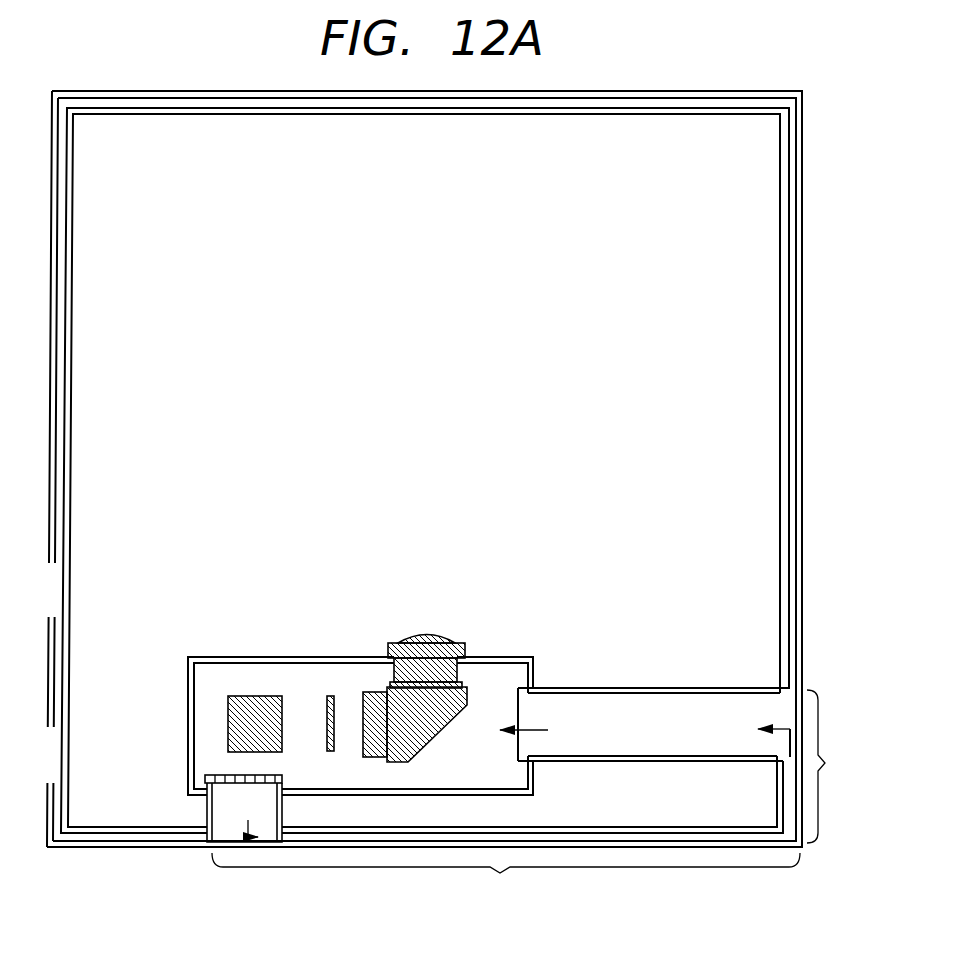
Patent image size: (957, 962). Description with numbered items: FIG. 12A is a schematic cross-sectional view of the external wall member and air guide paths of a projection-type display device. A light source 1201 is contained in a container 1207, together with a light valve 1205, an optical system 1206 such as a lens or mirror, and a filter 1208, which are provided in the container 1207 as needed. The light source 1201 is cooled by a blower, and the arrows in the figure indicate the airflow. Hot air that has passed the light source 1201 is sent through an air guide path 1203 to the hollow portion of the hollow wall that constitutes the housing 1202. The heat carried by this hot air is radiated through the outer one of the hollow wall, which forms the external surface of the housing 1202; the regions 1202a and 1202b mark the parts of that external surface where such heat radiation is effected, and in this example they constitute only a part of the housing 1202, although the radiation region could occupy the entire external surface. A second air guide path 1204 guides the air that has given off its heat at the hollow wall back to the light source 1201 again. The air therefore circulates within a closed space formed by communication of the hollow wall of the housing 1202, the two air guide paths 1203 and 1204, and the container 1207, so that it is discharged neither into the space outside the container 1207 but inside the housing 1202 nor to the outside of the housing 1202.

The light source 1201 is at (258, 696).
The housing 1202 is at (112, 847).
The heat radiation region of the external surface of the housing 1202a is at (506, 880).
The heat radiation region of the external surface of the housing 1202b is at (851, 766).
The air guide path 1203 is at (223, 809).
The air guide path 1204 is at (667, 708).
The light valve 1205 is at (327, 713).
The optical system 1206 is at (427, 633).
The container 1207 is at (333, 657).
The filter 1208 is at (232, 775).